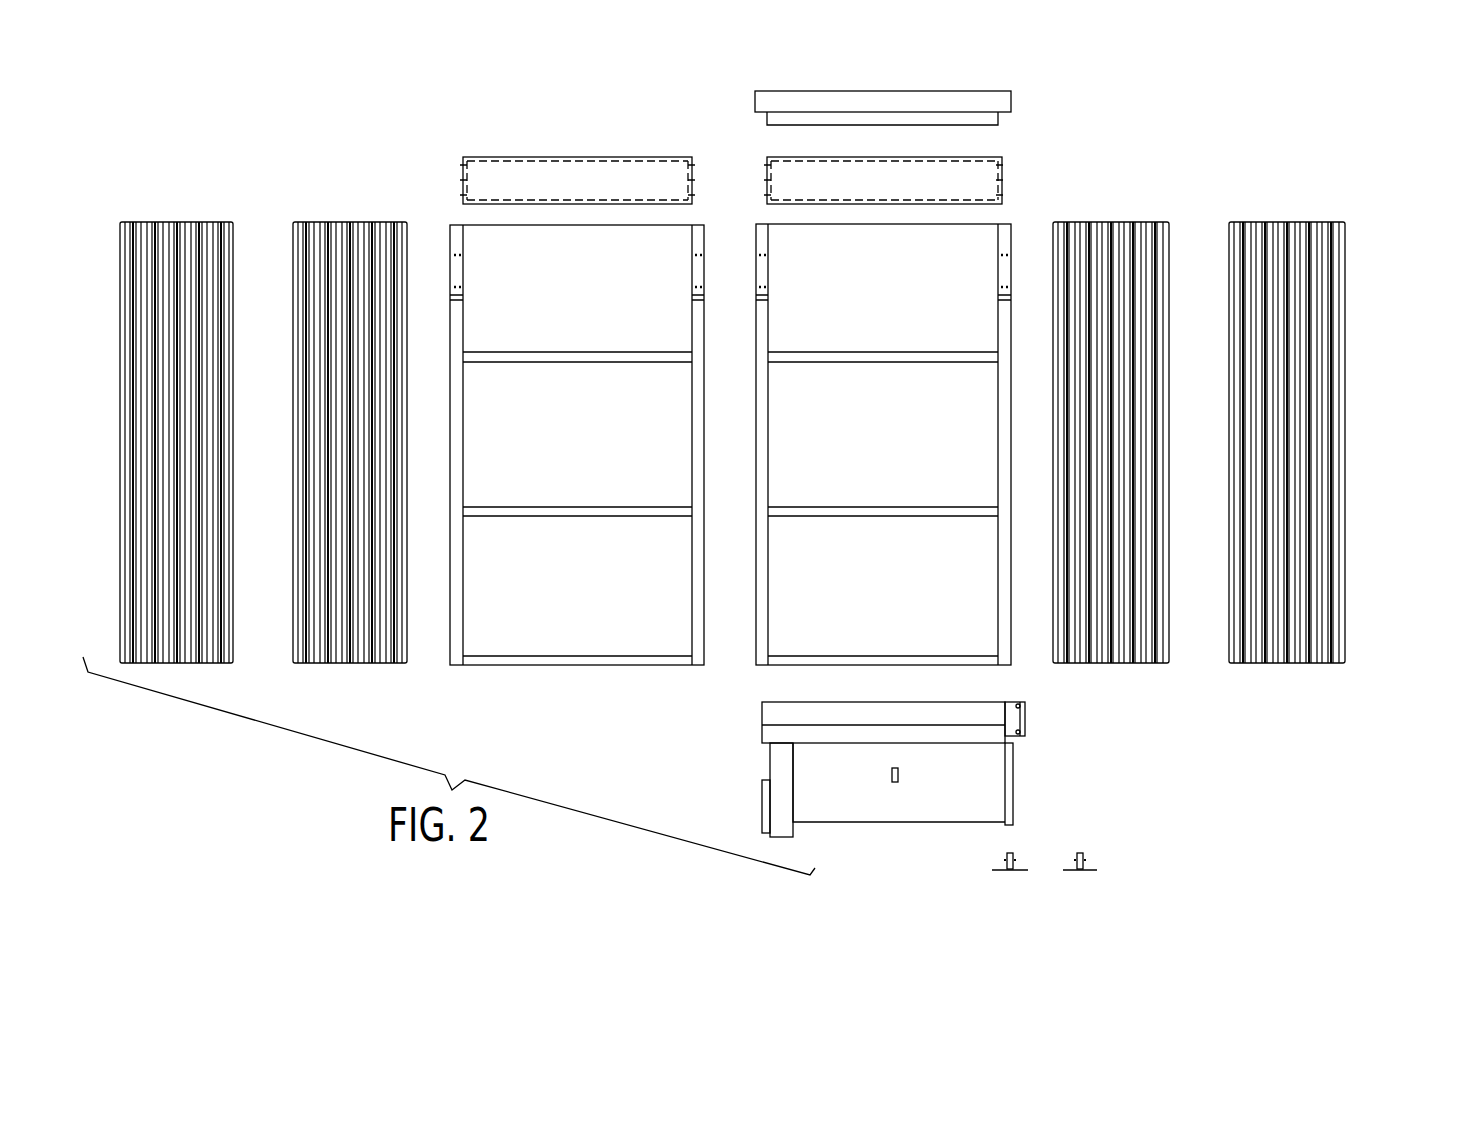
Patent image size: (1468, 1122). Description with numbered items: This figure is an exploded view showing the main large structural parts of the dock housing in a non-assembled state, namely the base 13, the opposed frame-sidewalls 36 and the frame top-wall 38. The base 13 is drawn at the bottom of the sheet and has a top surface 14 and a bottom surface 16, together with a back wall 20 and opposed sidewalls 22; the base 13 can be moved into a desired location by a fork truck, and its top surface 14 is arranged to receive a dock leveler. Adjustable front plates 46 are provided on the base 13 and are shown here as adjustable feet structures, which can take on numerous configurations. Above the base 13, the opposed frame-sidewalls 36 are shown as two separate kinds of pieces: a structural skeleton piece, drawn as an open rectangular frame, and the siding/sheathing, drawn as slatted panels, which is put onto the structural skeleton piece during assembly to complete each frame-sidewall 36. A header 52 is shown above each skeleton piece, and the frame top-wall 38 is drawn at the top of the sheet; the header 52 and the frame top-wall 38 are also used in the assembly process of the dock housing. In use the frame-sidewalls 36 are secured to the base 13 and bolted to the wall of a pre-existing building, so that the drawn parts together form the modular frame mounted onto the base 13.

The frame-sidewalls 36 is at (480, 225).
The header 52 is at (515, 175).
The frame-top wall 38 is at (887, 102).
The top surface 14 is at (950, 698).
The opposed sidewalls 22 is at (968, 720).
The base 13 is at (1007, 757).
The bottom surface 16 is at (933, 742).
The back wall 20 is at (757, 730).
The adjustable front plates 46 is at (1085, 860).